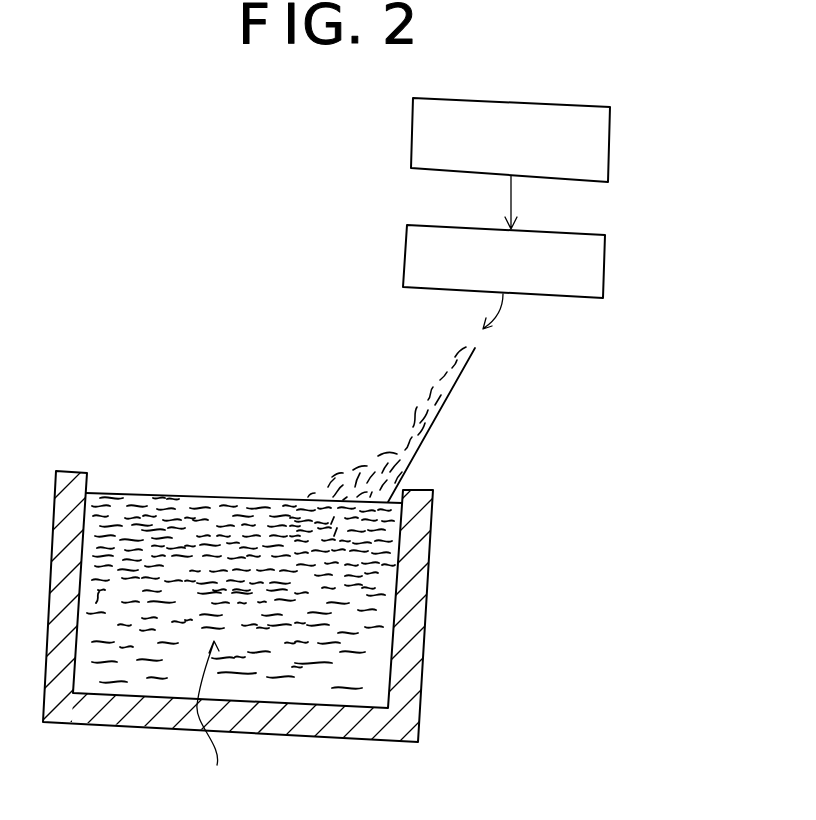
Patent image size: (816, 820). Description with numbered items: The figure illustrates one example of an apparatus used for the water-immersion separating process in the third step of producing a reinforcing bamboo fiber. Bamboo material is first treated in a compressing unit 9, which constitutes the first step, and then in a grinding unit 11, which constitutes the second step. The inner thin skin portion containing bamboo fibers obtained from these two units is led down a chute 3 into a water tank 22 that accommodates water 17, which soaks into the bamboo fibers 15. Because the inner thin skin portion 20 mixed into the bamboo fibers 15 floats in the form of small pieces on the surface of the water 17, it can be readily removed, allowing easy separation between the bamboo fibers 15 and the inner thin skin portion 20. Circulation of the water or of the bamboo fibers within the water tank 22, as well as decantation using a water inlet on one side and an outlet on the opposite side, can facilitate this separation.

The compressing unit 9 is at (611, 142).
The grinding unit 11 is at (606, 262).
The chute 3 is at (465, 372).
The inner thin skin portion 20 is at (202, 494).
The water tank 22 is at (446, 549).
The water 17 is at (390, 646).
The bamboo fibers 15 is at (216, 719).